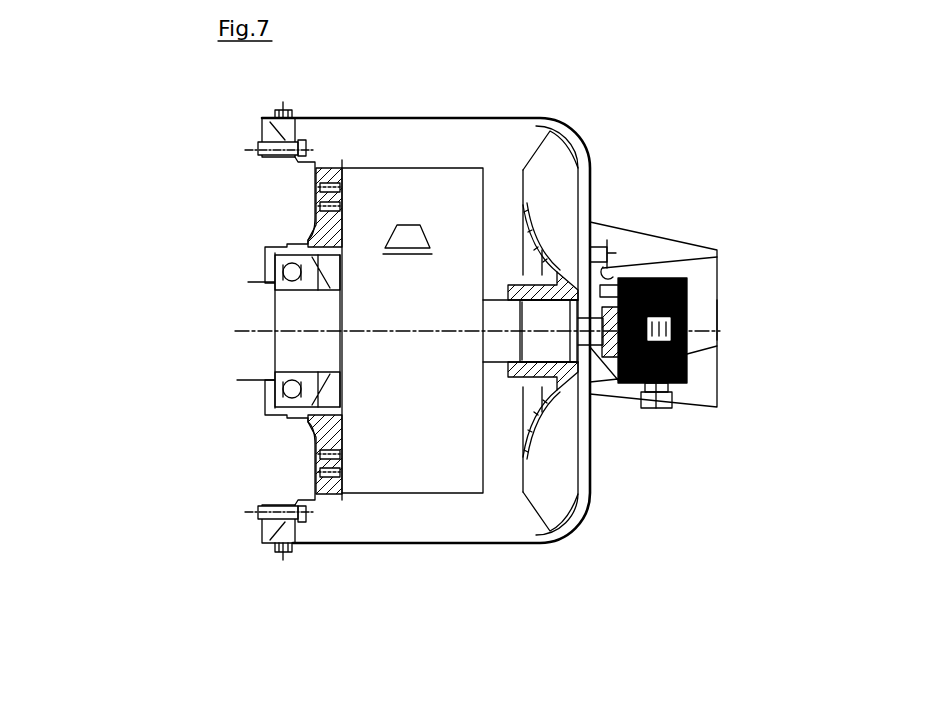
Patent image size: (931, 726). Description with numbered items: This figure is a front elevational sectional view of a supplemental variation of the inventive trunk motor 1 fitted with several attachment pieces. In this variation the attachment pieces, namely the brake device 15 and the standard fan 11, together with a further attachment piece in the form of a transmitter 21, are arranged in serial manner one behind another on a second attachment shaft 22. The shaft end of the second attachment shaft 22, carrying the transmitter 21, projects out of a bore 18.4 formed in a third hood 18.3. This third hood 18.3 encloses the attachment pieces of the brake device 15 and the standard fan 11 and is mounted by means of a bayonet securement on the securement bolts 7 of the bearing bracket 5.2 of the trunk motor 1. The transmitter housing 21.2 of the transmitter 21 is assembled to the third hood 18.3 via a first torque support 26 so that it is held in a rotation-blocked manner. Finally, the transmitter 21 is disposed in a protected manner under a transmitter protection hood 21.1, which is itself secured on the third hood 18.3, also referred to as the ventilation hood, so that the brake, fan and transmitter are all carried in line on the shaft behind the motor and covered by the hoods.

The trunk motor 1 is at (187, 331).
The bearing bracket 5.2 is at (310, 236).
The securement bolts 7 is at (293, 553).
The standard fan 11 is at (549, 494).
The brake device 15 is at (431, 461).
The third hood 18.3 is at (590, 177).
The bore 18.4 is at (620, 380).
The transmitter 21 is at (660, 367).
The transmitter protection hood 21.1 is at (717, 318).
The transmitter housing 21.2 is at (687, 377).
The second attachment shaft 22 is at (510, 345).
The first torque support 26 is at (717, 258).